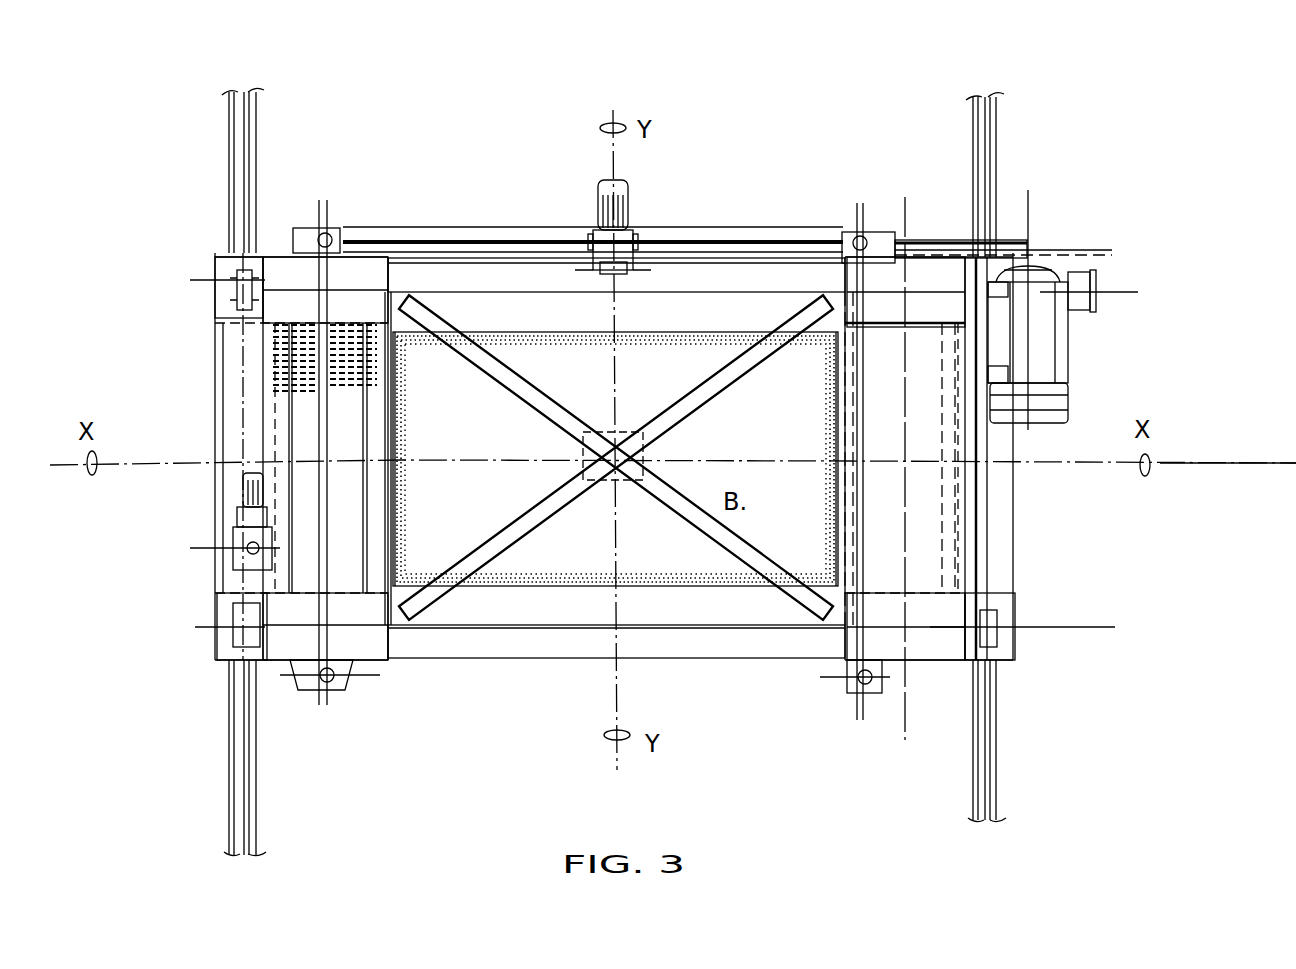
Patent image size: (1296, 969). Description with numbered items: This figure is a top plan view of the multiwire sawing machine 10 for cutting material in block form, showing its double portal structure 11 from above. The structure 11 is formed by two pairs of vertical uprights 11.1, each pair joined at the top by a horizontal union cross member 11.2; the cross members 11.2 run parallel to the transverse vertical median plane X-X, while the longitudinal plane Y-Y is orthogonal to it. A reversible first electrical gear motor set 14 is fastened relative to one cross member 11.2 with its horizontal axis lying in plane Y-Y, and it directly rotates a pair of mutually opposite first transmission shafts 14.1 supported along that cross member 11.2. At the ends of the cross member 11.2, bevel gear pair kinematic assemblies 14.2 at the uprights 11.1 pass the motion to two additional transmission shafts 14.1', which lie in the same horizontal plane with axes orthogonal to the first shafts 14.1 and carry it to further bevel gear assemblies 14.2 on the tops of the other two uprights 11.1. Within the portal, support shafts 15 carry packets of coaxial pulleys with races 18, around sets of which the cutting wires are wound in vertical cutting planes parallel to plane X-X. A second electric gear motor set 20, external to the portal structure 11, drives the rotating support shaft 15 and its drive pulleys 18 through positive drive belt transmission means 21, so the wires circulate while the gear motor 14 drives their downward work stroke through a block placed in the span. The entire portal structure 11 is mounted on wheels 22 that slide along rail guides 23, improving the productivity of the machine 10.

The multiwire sawing machine 10 is at (902, 96).
The double portal structure 11 is at (155, 247).
The vertical upright 11.1 is at (278, 253).
The horizontal union cross member 11.2 is at (702, 245).
The first electrical gear motor set 14 is at (598, 195).
The first transmission shaft 14.1 is at (601, 210).
The additional transmission shaft 14.1' is at (626, 459).
The bevel gear pair kinematic assembly 14.2 is at (326, 225).
The support shaft 15 is at (305, 442).
The pulley with race 18 is at (270, 345).
The second electric gear motor set 20 is at (1068, 358).
The positive drive belt transmission means 21 is at (1002, 240).
The wheel 22 is at (213, 280).
The rail guide 23 is at (240, 778).